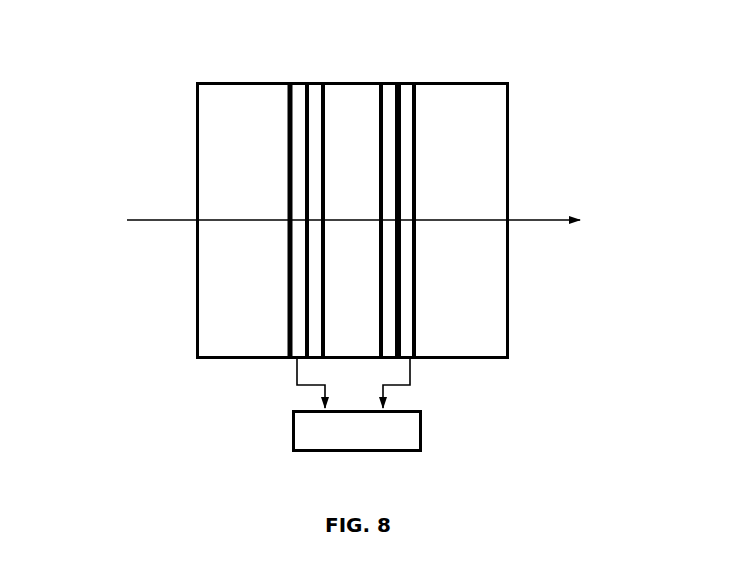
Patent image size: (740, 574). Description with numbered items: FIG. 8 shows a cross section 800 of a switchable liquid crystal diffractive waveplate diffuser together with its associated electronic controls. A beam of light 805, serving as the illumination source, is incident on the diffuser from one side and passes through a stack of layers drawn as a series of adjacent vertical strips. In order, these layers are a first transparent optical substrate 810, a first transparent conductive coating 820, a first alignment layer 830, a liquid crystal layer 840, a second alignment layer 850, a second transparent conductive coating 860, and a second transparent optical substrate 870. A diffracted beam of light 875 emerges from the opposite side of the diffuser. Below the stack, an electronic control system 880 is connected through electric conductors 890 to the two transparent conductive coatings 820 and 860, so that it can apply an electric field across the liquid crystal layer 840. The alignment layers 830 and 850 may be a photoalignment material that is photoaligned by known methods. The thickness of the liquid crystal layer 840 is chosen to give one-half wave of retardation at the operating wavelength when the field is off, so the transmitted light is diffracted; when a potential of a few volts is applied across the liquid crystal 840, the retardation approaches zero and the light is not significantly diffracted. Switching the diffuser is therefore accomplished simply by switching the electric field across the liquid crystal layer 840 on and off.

The switchable liquid crystal diffractive waveplate diffuser 800 is at (104, 87).
The beam of light incident on switchable liquid crystal diffractive waveplate diffus 805 is at (147, 219).
The transparent optical substrate 810 is at (221, 265).
The transparent electrode 820 is at (300, 90).
The alignment layer 830 is at (317, 88).
The liquid crystal 840 is at (345, 97).
The alignment layer 850 is at (385, 88).
The transparent electrode 860 is at (407, 88).
The transparent optical substrate 870 is at (487, 262).
The beam of light diffracted by switchable liquid crystal diffractive waveplate diff 875 is at (533, 215).
The electronics control system 880 is at (410, 438).
The electrical conductor 890 is at (411, 389).